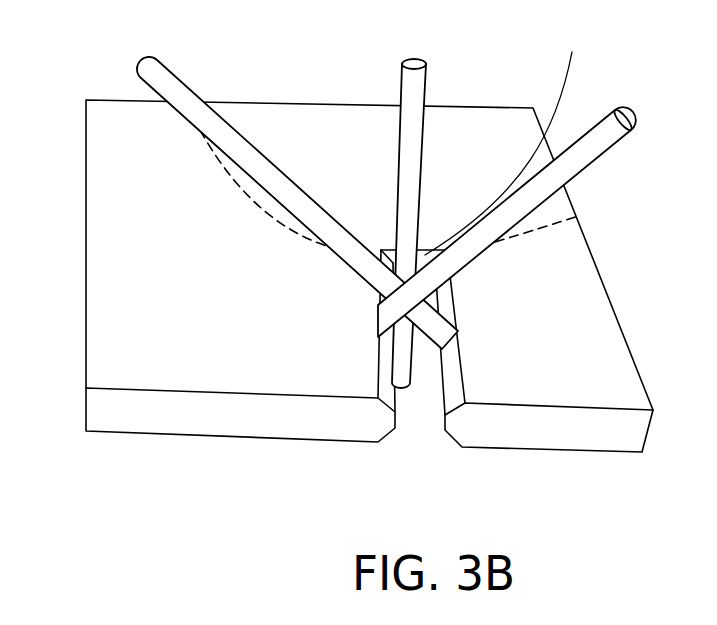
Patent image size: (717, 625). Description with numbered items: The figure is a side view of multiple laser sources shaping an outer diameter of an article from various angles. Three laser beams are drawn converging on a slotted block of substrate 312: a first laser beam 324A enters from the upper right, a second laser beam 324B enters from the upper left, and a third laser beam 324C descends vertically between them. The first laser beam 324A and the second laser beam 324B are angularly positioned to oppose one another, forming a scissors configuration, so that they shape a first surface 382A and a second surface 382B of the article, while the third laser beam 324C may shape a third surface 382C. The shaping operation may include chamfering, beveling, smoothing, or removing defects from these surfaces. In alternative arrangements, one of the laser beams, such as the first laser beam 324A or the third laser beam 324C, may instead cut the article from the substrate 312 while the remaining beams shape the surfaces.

The substrate 312 is at (575, 433).
The first laser beam 324A is at (482, 243).
The second laser beam 324B is at (230, 135).
The third laser beam 324C is at (413, 130).
The first surface 382A is at (383, 385).
The second surface 382B is at (457, 380).
The third surface 382C is at (516, 142).